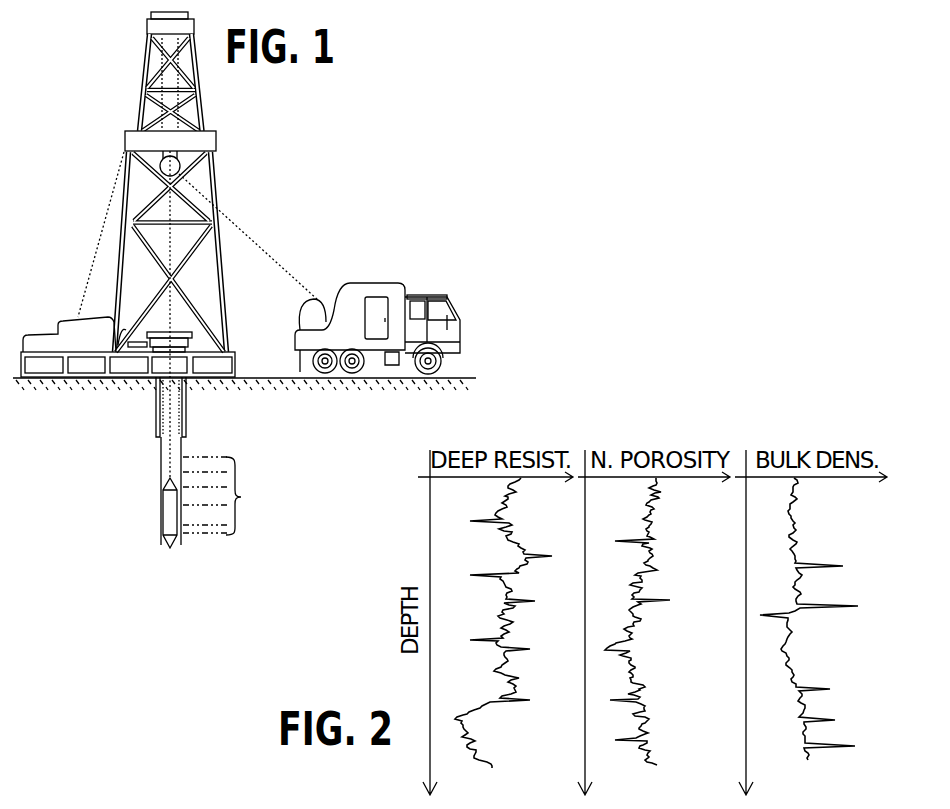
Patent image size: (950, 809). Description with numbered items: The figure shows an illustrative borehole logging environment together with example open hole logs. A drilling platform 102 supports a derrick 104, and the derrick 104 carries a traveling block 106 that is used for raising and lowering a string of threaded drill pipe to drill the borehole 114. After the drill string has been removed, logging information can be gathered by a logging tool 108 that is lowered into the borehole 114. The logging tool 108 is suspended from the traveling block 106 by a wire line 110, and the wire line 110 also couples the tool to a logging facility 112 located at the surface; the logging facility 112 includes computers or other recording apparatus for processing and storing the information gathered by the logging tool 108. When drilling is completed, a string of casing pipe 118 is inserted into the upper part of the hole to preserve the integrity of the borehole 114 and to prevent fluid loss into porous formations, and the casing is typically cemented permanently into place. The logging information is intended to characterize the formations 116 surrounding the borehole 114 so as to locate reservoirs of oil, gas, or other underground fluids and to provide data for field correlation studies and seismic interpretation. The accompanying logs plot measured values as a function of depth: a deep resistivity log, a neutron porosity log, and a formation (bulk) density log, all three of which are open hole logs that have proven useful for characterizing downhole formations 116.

The drilling platform 102 is at (236, 356).
The derrick 104 is at (229, 324).
The traveling block 106 is at (180, 168).
The logging tool 108 is at (165, 495).
The wire line 110 is at (226, 222).
The logging facility 112 is at (345, 284).
The borehole 114 is at (184, 449).
The formations 116 is at (233, 496).
The casing pipe 118 is at (165, 438).